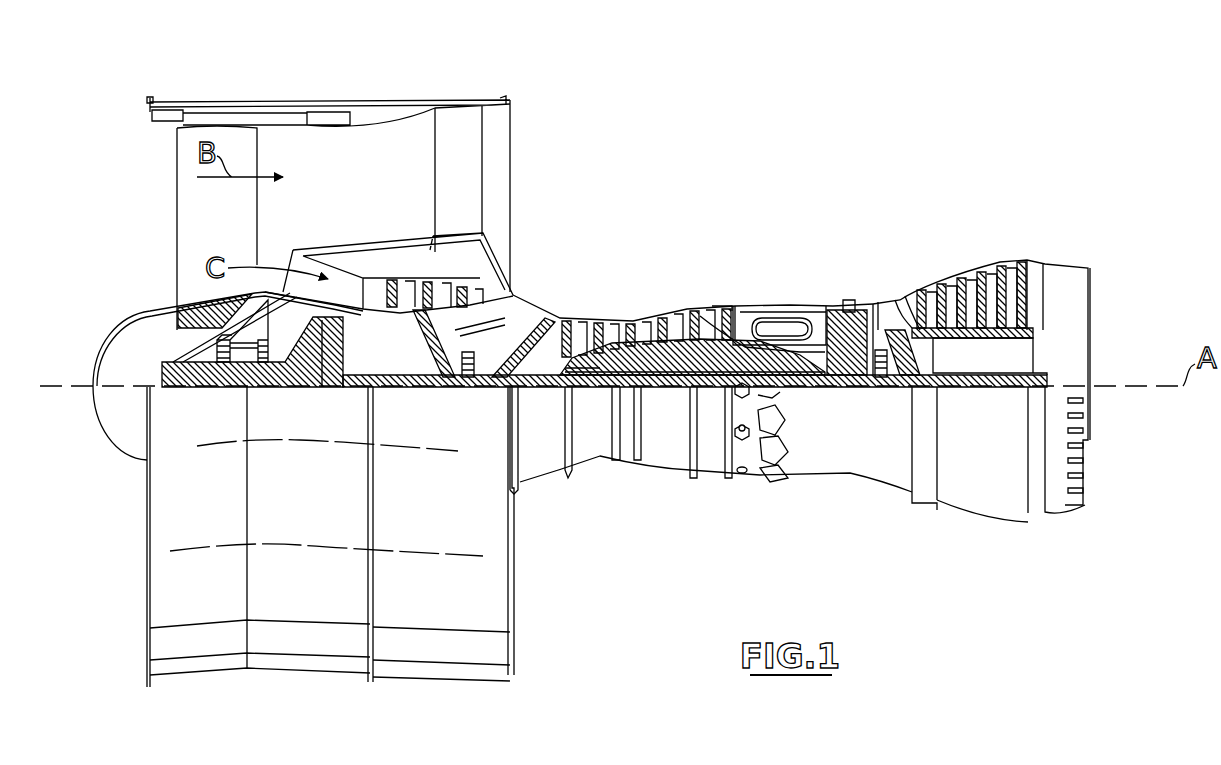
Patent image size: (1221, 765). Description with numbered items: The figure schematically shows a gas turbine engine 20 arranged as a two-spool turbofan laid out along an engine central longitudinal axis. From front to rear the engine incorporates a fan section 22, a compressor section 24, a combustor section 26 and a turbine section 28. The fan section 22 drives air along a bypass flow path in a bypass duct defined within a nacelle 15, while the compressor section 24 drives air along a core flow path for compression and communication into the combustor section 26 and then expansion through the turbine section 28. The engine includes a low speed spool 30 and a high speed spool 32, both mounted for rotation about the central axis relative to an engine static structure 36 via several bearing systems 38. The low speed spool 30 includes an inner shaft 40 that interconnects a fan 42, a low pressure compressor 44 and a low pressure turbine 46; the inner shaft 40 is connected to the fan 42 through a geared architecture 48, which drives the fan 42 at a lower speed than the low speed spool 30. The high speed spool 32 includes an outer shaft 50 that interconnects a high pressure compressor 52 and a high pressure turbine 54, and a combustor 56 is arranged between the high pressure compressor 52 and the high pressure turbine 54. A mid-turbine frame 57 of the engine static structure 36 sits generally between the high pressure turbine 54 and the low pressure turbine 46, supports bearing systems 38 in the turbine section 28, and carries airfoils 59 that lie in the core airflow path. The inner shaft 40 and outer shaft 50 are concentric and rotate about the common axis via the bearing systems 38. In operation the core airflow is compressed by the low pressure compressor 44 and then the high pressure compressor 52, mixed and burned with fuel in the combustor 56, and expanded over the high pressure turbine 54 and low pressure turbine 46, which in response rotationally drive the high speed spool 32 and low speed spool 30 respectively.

The nacelle 15 is at (328, 103).
The gas turbine engine 20 is at (790, 155).
The fan section 22 is at (262, 93).
The compressor section 24 is at (560, 292).
The combustor section 26 is at (785, 278).
The turbine section 28 is at (930, 242).
The low speed spool 30 is at (667, 395).
The high speed spool 32 is at (716, 335).
The engine static structure 36 is at (707, 472).
The bearing systems 38 is at (468, 372).
The inner shaft 40 is at (535, 400).
The fan 42 is at (231, 231).
The low pressure compressor 44 is at (440, 300).
The low pressure turbine 46 is at (976, 276).
The geared architecture 48 is at (337, 365).
The outer shaft 50 is at (795, 376).
The high pressure compressor 52 is at (640, 345).
The high pressure turbine 54 is at (856, 302).
The combustor 56 is at (790, 326).
The mid-turbine frame 57 is at (893, 290).
The airfoils 59 is at (932, 362).